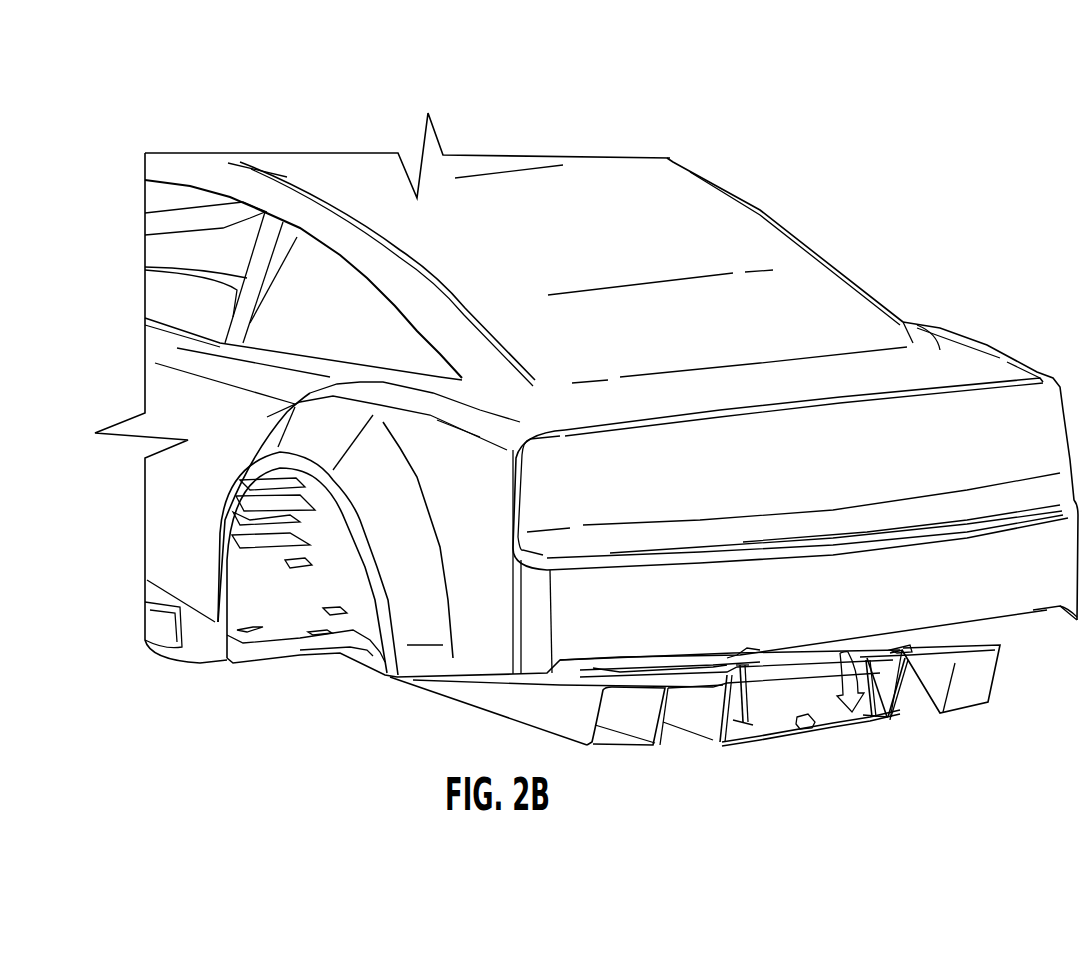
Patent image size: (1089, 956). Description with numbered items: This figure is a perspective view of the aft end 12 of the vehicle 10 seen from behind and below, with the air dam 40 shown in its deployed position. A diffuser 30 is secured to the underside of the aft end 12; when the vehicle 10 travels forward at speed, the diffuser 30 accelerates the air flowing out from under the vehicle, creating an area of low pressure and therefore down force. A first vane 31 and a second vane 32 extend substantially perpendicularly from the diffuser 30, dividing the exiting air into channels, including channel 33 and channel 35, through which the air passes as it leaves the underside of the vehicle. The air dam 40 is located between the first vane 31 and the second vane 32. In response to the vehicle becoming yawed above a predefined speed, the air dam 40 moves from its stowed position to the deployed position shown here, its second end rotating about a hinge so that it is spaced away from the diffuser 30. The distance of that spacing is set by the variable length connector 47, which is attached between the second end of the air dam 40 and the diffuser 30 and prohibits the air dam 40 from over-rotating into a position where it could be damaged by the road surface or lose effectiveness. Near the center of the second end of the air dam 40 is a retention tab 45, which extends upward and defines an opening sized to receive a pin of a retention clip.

The vehicle 10 is at (692, 143).
The aft end 12 is at (975, 334).
The diffuser 30 is at (644, 694).
The first vane 31 is at (723, 714).
The second vane 32 is at (898, 706).
The channel 33 is at (684, 734).
The channel 35 is at (918, 722).
The air dam 40 is at (837, 706).
The retention tab 45 is at (807, 727).
The variable length connector 47 is at (747, 696).